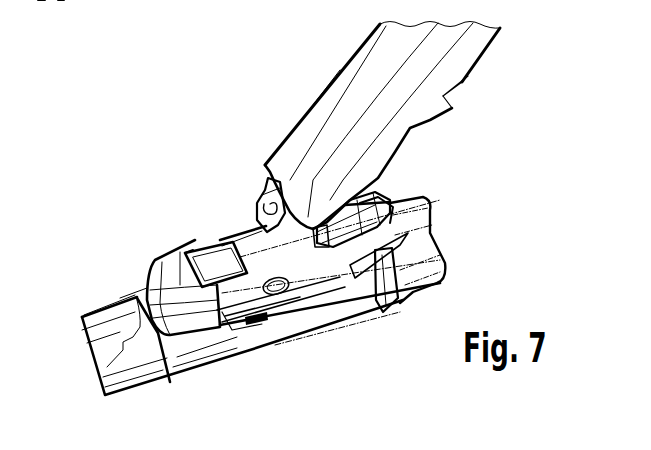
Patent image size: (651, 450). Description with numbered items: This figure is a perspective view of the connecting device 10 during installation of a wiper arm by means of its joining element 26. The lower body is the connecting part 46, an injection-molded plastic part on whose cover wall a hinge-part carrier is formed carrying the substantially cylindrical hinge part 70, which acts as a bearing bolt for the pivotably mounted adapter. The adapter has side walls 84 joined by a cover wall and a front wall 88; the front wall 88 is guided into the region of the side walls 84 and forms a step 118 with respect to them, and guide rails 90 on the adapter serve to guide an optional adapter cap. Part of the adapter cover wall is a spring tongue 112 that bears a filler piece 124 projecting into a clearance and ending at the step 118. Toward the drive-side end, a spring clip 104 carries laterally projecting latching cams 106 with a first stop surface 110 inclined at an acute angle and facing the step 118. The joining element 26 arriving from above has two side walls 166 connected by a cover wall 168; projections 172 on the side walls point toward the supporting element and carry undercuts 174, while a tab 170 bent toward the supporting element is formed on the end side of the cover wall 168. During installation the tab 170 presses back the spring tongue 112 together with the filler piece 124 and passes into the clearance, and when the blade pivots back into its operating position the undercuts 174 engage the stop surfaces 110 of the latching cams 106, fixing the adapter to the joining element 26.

The connecting device 10 is at (140, 238).
The joining element 26 is at (393, 114).
The connecting part 46 is at (173, 365).
The hinge part 70 is at (278, 293).
The side walls 84 is at (255, 445).
The front wall 88 is at (150, 285).
The guide rails 90 is at (185, 5).
The spring clip 104 is at (428, 445).
The latching cams 106 is at (417, 247).
The first stop surface 110 is at (380, 268).
The spring tongue 112 is at (215, 257).
The step 118 is at (234, 328).
The filler piece 124 is at (191, 250).
The side walls 166 is at (386, 141).
The cover wall 168 is at (318, 127).
The tab 170 is at (222, 220).
The projections 172 is at (452, 108).
The undercuts 174 is at (470, 77).